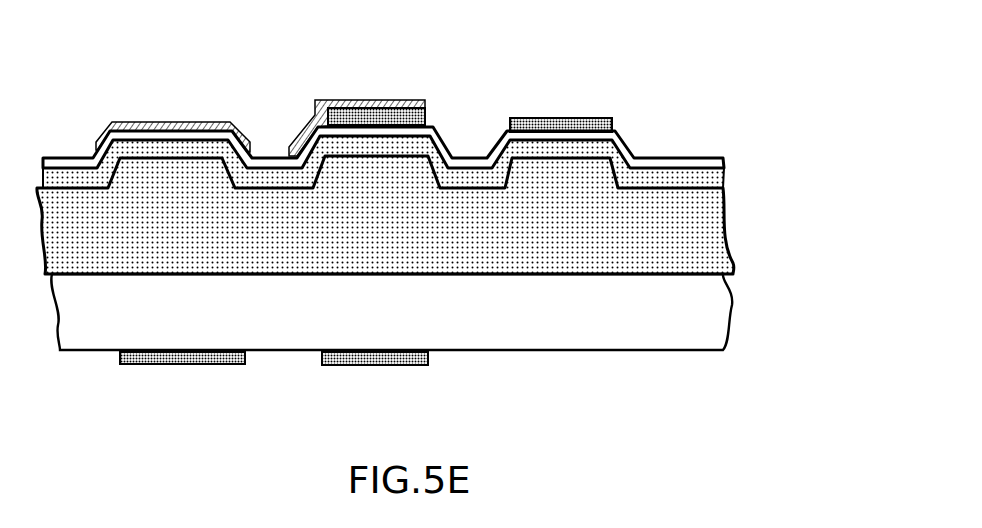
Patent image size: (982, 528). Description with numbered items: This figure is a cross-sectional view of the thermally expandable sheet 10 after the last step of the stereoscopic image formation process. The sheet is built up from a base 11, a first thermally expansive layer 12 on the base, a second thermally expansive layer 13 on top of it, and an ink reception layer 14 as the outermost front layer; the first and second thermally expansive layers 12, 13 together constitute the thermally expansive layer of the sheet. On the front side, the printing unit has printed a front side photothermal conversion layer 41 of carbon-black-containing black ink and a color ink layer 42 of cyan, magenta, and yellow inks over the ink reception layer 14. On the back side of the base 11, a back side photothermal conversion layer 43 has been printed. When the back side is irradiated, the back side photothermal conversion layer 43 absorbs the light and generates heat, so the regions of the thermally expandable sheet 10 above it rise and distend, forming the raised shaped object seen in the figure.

The thermally expandable sheet 10 is at (437, 231).
The base 11 is at (722, 310).
The first thermally expansive layer 12 is at (710, 235).
The second thermally expansive layer 13 is at (710, 180).
The ink reception layer 14 is at (710, 160).
The front side photothermal conversion layer 41 is at (427, 114).
The color ink layer 42 is at (157, 130).
The back side photothermal conversion layer 43 is at (180, 360).